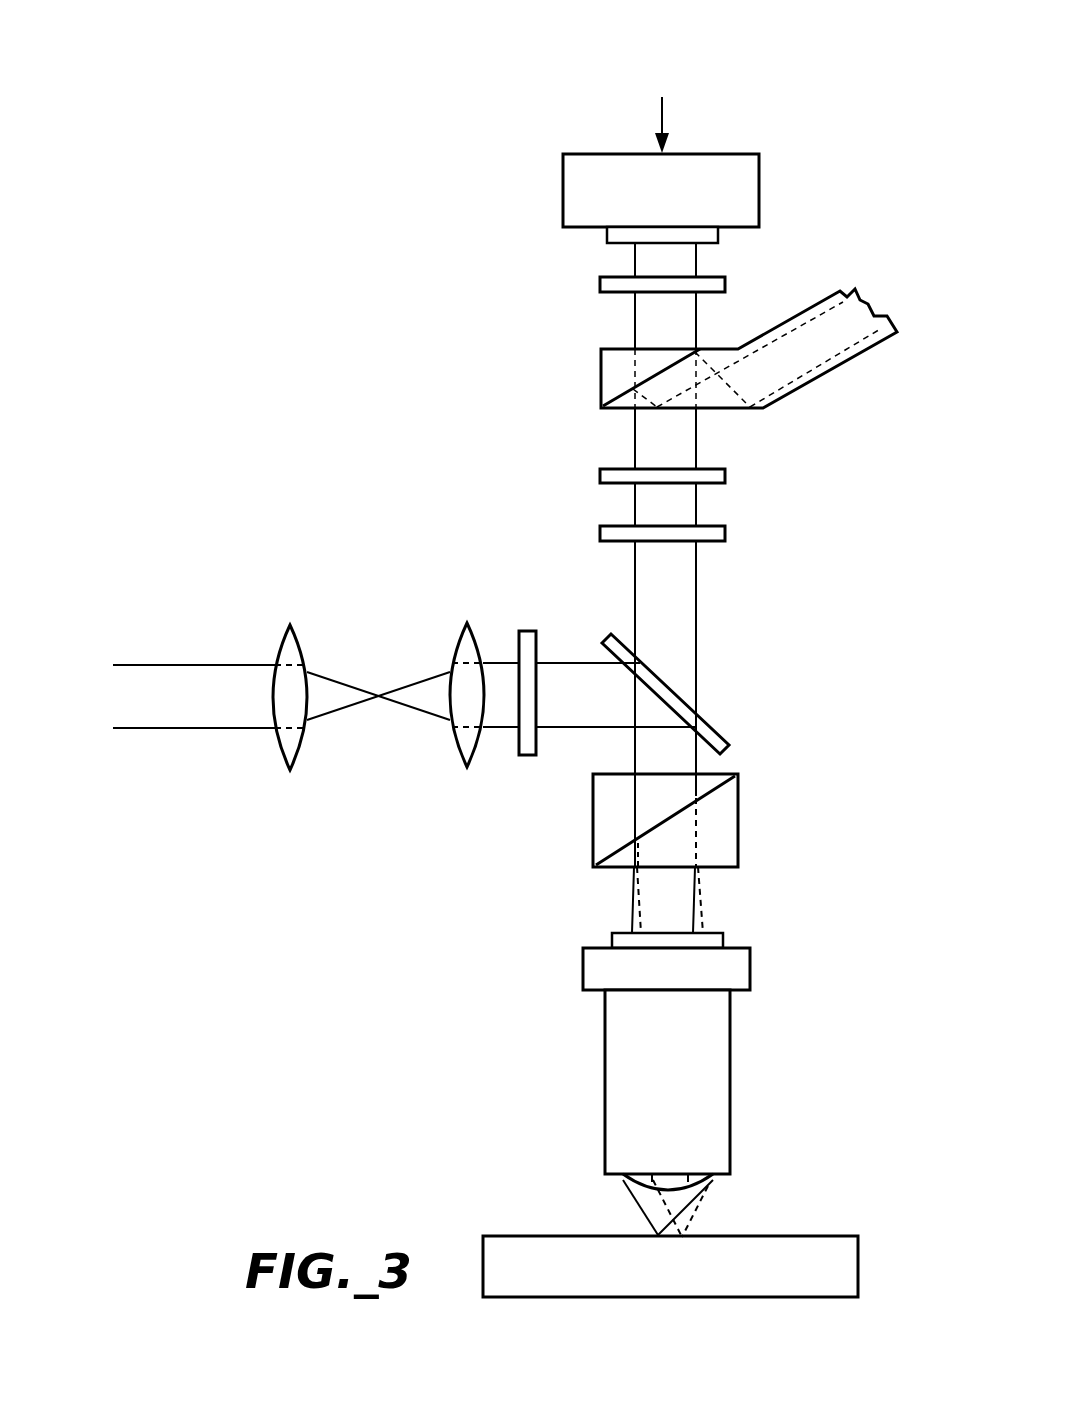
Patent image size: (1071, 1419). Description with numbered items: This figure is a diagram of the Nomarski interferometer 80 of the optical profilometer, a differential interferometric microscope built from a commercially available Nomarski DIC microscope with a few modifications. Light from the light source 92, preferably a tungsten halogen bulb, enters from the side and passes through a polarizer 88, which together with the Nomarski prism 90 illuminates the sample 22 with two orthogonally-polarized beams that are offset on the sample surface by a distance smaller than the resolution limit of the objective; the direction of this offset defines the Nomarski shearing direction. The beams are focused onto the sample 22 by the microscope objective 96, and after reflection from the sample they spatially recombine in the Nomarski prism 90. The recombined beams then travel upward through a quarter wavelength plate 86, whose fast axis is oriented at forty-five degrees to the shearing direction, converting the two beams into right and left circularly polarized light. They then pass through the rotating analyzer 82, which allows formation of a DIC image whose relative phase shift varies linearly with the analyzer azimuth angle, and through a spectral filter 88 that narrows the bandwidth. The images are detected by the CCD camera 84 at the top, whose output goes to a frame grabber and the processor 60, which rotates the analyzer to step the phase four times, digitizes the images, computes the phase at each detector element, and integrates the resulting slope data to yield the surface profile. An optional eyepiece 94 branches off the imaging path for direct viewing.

The sample 22 is at (772, 1233).
The processor 60 is at (659, 76).
The interferometer 80 is at (350, 197).
The rotating analyzer 82 is at (727, 476).
The CCD camera 84 is at (750, 190).
The quarter wavelength plate 86 is at (727, 533).
The polarizer 88 is at (727, 284).
The Nomarski prism 90 is at (742, 818).
The light source 92 is at (203, 717).
The eyepiece 94 is at (858, 308).
The microscope objective 96 is at (720, 1073).